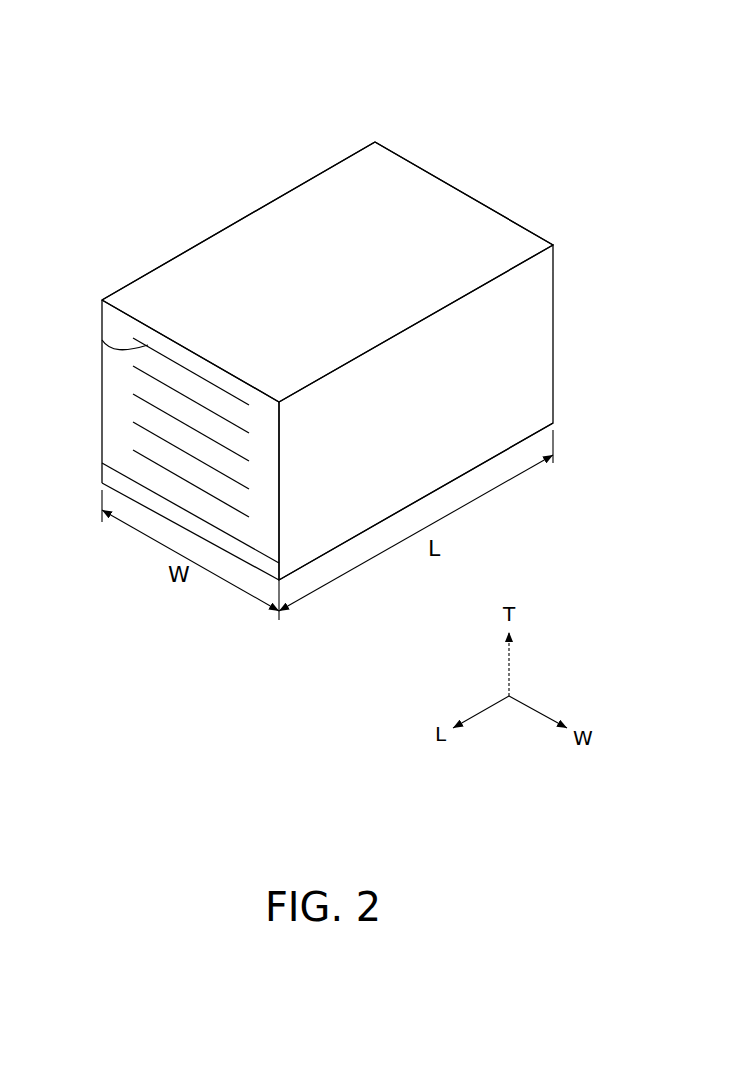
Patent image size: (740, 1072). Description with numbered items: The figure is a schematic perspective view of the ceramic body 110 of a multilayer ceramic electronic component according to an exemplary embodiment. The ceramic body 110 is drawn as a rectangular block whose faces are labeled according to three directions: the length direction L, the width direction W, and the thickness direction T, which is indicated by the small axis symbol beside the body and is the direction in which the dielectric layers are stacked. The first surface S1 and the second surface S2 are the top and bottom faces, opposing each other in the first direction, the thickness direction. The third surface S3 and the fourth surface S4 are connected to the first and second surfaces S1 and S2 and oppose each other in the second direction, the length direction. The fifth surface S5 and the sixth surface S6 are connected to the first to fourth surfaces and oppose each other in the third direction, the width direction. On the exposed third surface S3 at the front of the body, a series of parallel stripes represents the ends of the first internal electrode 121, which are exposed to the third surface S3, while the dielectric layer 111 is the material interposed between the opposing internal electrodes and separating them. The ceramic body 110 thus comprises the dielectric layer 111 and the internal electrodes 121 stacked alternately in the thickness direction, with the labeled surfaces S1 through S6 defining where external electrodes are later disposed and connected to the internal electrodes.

The ceramic body 110 is at (125, 39).
The dielectric layer 111 is at (116, 373).
The first internal electrode 121 is at (102, 340).
The first surface S1 is at (328, 209).
The second surface S2 is at (336, 526).
The third surface S3 is at (149, 457).
The fourth surface S4 is at (444, 221).
The fifth surface S5 is at (527, 348).
The sixth surface S6 is at (177, 291).